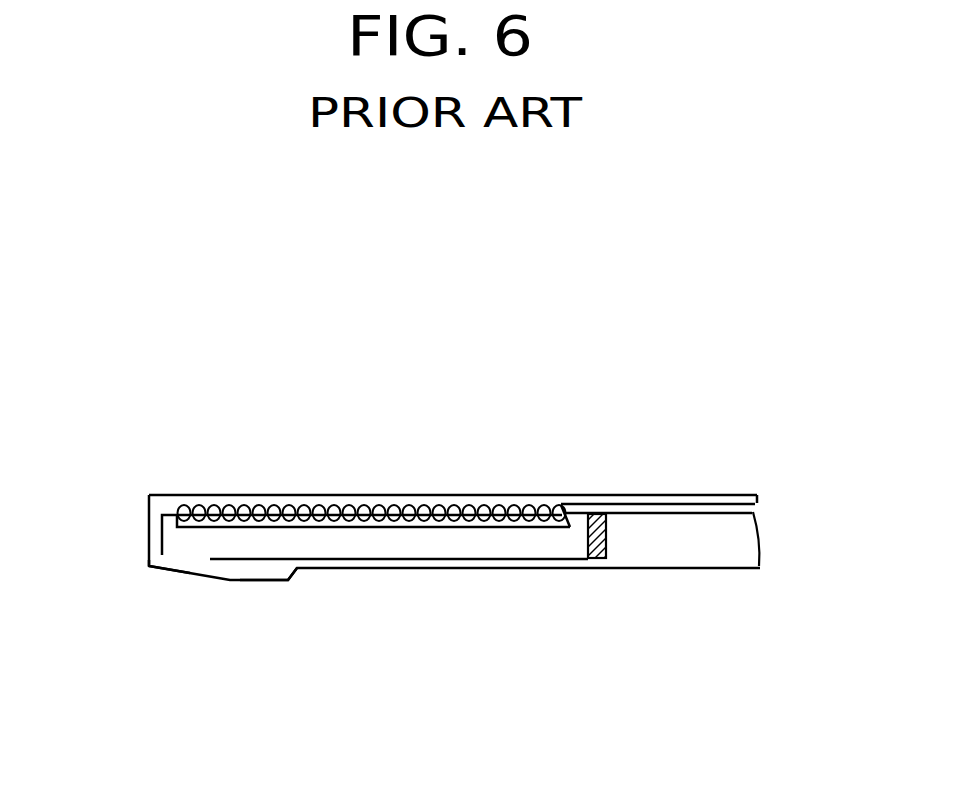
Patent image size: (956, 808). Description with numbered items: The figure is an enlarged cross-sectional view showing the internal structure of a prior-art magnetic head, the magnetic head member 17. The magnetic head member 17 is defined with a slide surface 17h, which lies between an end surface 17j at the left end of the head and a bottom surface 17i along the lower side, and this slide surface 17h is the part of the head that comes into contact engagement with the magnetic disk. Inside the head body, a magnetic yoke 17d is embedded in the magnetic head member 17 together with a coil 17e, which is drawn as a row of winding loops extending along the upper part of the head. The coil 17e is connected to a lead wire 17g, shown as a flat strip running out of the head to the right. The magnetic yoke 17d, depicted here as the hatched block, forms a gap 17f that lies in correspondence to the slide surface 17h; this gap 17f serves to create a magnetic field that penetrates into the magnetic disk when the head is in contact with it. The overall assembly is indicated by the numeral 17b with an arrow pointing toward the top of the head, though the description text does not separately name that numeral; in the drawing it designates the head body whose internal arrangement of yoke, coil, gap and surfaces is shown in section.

The magnetic head member 17 is at (515, 310).
The head arm 17b is at (533, 484).
The magnetic yoke 17d is at (595, 558).
The coil 17e is at (348, 505).
The gap 17f is at (198, 560).
The lead wire 17g is at (692, 503).
The slide surface 17h is at (160, 573).
The bottom surface 17i is at (268, 582).
The end surface 17j is at (149, 541).